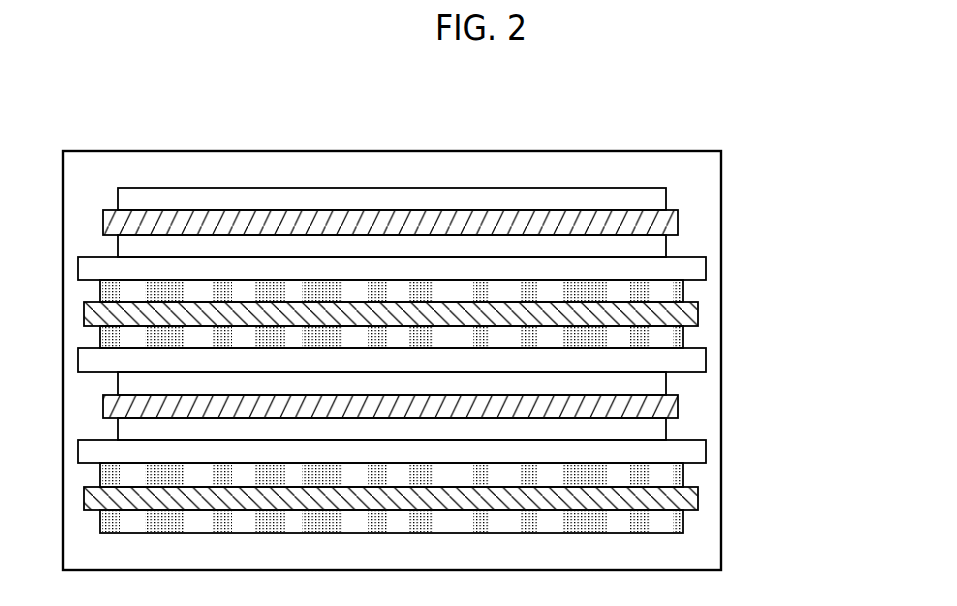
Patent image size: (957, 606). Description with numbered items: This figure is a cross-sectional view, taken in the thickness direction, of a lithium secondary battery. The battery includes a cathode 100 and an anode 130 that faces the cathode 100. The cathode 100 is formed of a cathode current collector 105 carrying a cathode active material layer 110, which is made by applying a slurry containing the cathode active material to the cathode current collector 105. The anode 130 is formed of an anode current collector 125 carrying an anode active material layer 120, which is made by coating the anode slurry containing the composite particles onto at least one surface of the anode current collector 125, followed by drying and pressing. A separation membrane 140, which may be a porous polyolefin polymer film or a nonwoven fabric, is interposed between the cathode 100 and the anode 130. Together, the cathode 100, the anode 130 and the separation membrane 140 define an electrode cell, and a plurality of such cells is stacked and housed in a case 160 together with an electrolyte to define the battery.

The cathode 100 is at (482, 226).
The cathode current collector 105 is at (678, 221).
The cathode active material layer 110 is at (658, 200).
The anode active material layer 120 is at (683, 288).
The anode current collector 125 is at (698, 312).
The anode 130 is at (473, 318).
The separation membrane 140 is at (583, 265).
The case 160 is at (721, 498).